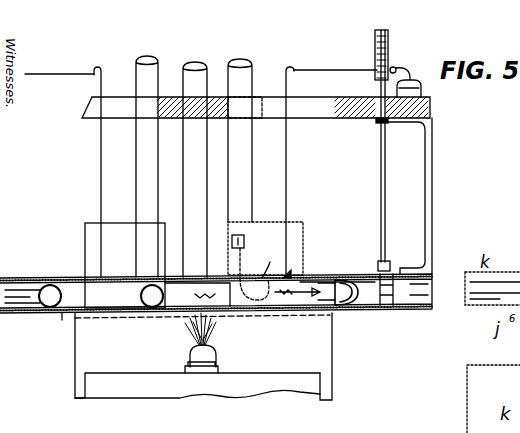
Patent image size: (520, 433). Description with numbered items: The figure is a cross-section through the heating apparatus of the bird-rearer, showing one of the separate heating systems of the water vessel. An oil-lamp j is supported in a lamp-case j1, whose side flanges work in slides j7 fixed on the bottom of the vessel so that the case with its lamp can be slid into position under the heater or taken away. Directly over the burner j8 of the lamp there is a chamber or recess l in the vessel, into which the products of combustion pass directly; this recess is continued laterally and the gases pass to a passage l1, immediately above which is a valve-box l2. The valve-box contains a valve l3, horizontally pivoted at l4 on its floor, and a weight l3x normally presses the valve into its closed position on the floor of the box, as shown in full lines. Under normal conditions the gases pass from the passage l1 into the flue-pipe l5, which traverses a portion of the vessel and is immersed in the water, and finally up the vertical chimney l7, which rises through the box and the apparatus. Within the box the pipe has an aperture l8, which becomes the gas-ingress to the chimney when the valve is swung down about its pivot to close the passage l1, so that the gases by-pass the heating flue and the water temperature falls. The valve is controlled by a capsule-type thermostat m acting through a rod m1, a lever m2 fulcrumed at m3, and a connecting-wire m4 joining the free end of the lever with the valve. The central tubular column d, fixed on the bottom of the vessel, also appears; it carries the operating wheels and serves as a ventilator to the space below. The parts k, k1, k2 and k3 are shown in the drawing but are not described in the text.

The track rail k is at (216, 305).
The lever m2 is at (322, 56).
The connecting-wire m4 is at (300, 145).
The cross bar k2 is at (455, 108).
The chimney l7 is at (143, 157).
The central tubular column d is at (193, 193).
The passage l1 is at (243, 163).
The valve-box l2 is at (318, 213).
The flue-pipe l5 is at (72, 296).
The aperture l8 is at (232, 242).
The valve l3 is at (271, 257).
The pivot l4 is at (290, 274).
The weight l3x is at (328, 283).
The chamber or recess l is at (185, 297).
The slides j7 is at (62, 318).
The lamp-case j1 is at (348, 353).
The oil-lamp j is at (187, 387).
The burner j8 is at (218, 352).
The chamber wall k3 is at (432, 190).
The rod m1 is at (381, 162).
The scale k1 is at (388, 44).
The fulcrum m3 is at (397, 68).
The thermostat m is at (393, 306).